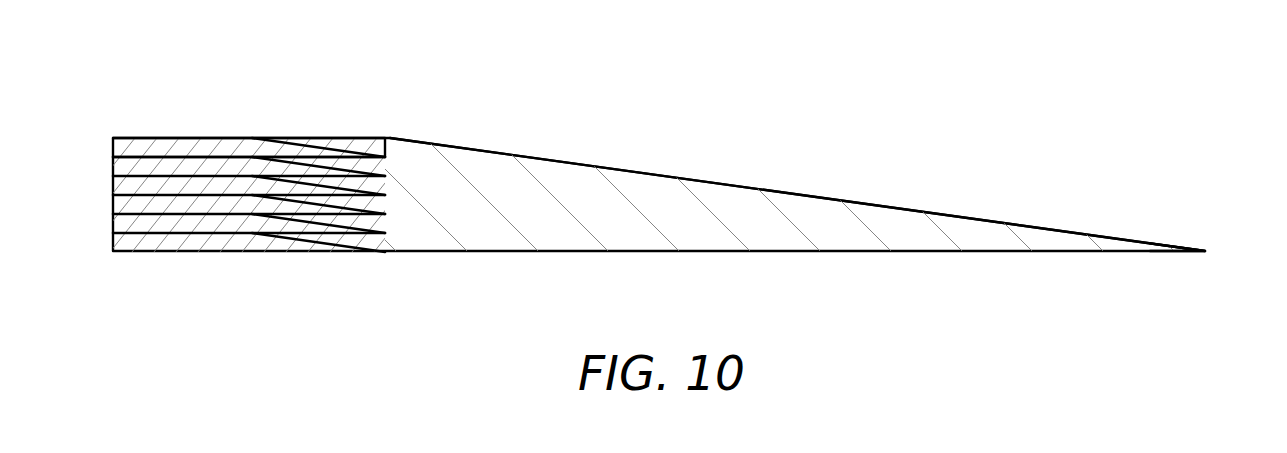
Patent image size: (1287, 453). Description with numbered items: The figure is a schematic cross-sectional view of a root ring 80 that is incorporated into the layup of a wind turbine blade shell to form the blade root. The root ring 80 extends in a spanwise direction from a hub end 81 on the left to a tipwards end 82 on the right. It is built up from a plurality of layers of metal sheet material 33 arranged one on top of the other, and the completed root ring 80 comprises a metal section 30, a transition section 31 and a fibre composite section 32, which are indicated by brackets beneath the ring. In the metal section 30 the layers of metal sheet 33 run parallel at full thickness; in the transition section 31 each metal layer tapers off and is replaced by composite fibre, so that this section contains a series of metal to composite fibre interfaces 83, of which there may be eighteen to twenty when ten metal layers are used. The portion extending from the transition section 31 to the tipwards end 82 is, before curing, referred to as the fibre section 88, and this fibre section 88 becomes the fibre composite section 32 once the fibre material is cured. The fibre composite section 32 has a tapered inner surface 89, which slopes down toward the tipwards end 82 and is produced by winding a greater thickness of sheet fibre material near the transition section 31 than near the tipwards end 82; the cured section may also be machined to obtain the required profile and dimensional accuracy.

The root ring 80 is at (124, 87).
The metal sheet 33 is at (123, 145).
The hub end 81 is at (113, 203).
The metal to composite fibre interface 83 is at (323, 152).
The metal section 30 is at (247, 269).
The transition section 31 is at (382, 269).
The fibre composite section 32 is at (1205, 269).
The fibre section 88 is at (1205, 93).
The tapered inner surface 89 is at (825, 197).
The tipwards end 82 is at (1205, 251).